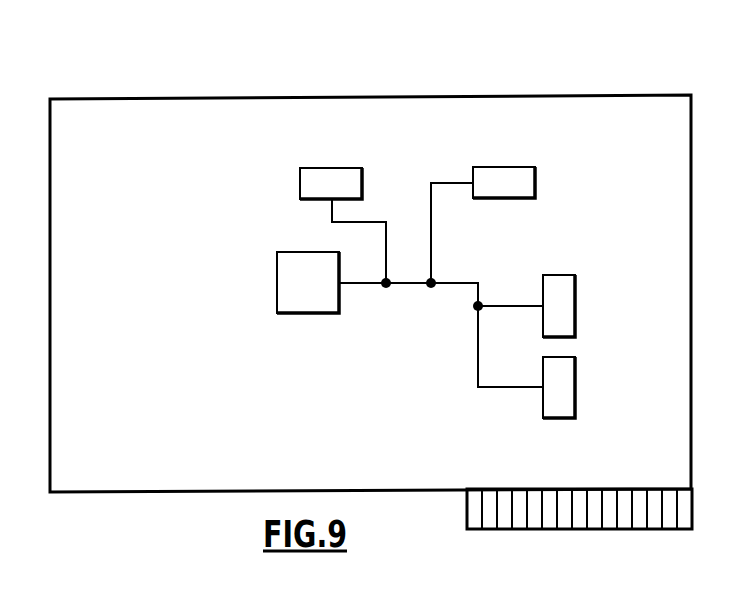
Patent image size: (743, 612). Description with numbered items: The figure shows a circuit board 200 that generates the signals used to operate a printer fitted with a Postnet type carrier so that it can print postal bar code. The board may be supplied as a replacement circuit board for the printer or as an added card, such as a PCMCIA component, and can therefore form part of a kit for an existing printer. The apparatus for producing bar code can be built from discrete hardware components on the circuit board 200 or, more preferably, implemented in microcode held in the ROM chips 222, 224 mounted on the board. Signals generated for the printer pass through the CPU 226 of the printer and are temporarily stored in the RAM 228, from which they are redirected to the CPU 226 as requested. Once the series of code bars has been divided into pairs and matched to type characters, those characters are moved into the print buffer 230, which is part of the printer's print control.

The circuit board 200 is at (152, 81).
The ROM chip 222 is at (575, 306).
The ROM chip 224 is at (575, 395).
The CPU 226 is at (277, 279).
The RAM 228 is at (328, 168).
The print buffer 230 is at (494, 167).